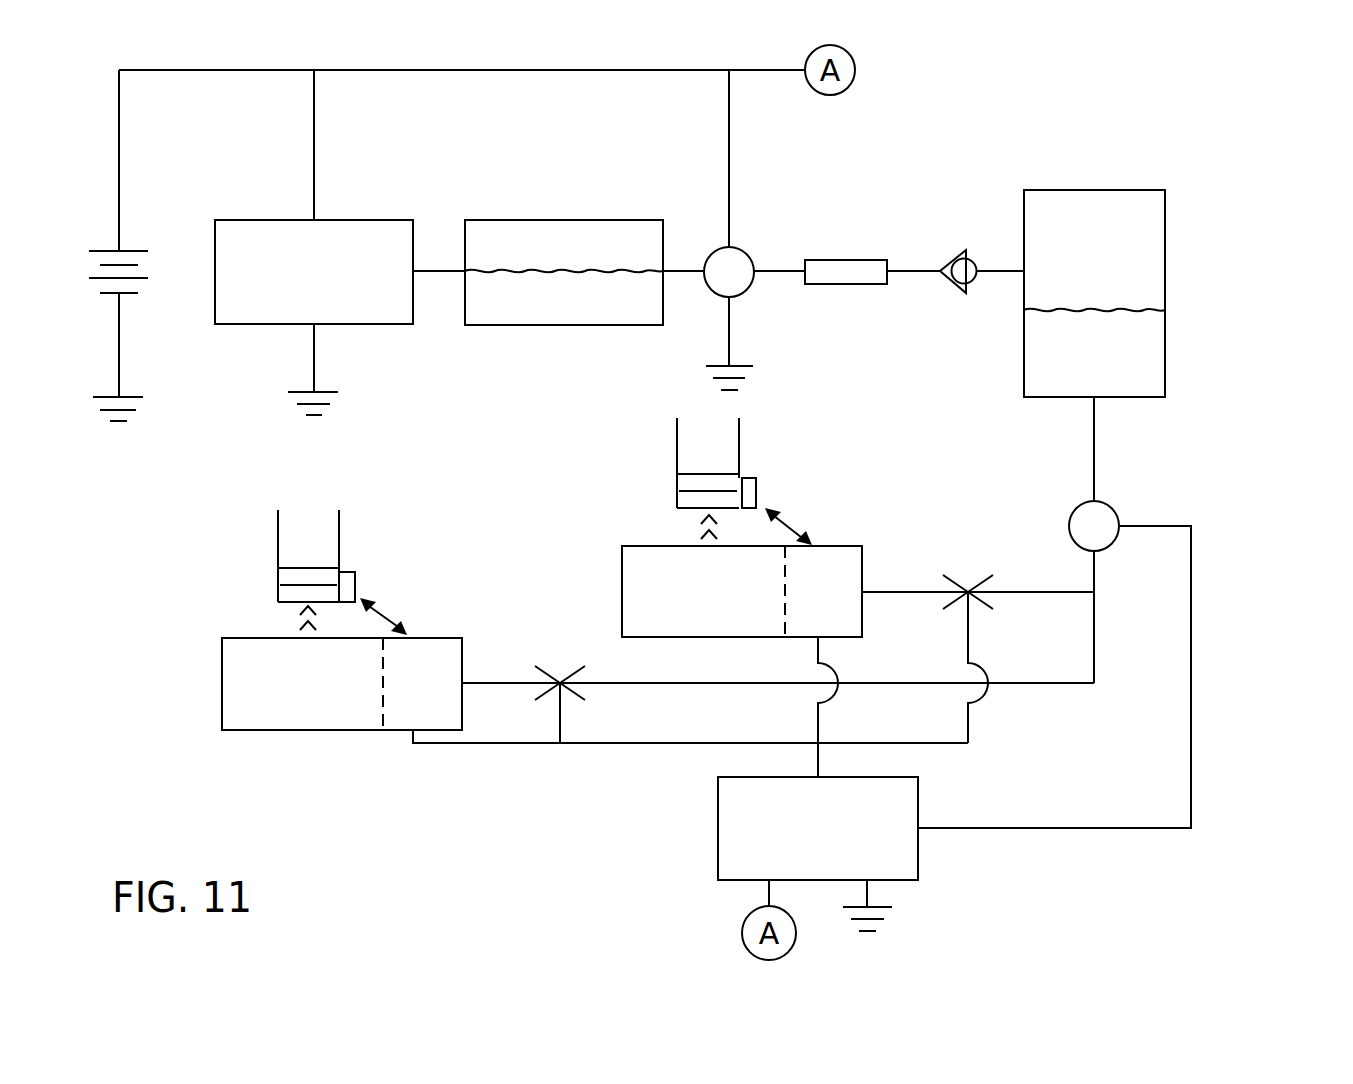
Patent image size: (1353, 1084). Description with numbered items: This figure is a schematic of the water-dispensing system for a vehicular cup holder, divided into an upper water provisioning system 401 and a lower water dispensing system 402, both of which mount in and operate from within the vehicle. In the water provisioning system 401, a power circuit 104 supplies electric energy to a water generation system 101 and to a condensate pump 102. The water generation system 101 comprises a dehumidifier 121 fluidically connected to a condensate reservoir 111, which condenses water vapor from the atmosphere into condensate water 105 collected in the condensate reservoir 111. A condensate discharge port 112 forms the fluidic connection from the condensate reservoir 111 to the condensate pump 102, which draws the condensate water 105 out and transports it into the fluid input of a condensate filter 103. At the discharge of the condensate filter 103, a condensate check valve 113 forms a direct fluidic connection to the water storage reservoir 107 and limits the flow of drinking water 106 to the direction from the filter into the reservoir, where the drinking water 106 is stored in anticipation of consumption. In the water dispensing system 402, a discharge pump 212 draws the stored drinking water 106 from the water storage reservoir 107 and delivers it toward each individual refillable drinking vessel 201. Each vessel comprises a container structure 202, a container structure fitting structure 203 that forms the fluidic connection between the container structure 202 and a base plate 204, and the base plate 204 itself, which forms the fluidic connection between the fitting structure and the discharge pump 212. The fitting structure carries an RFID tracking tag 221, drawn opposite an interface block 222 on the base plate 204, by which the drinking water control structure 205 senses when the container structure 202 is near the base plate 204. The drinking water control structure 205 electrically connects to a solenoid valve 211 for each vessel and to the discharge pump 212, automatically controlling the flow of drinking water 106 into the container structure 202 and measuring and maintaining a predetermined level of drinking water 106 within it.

The water generation system 101 is at (717, 157).
The condensate pump 102 is at (740, 248).
The condensate filter 103 is at (842, 260).
The power circuit 104 is at (148, 260).
The condensate water 105 is at (580, 305).
The drinking water 106 is at (1140, 350).
The water storage reservoir 107 is at (1165, 228).
The condensate reservoir 111 is at (582, 220).
The condensate discharge port 112 is at (685, 270).
The condensate check valve 113 is at (945, 250).
The dehumidifier 121 is at (357, 232).
The individual refillable drinking vessel 201 is at (545, 437).
The container structure 202 is at (500, 458).
The container structure fitting structure 203 is at (327, 582).
The base plate 204 is at (300, 730).
The drinking water control structure 205 is at (903, 792).
The solenoid valve 211 is at (560, 667).
The discharge pump 212 is at (1135, 511).
The RFID tracking tag 221 is at (362, 585).
The RFID interface 222 is at (453, 638).
The water provisioning system 401 is at (1275, 53).
The water dispensing system 402 is at (1275, 879).